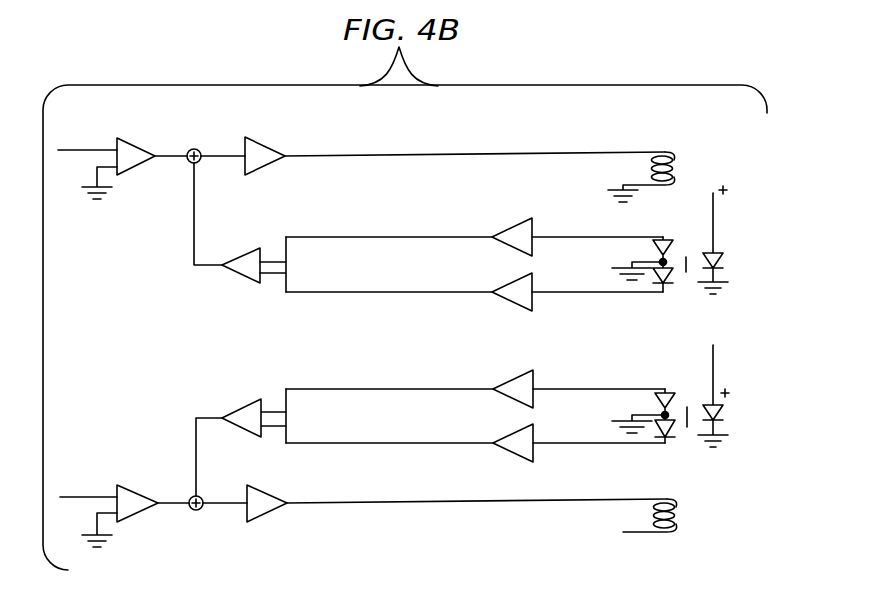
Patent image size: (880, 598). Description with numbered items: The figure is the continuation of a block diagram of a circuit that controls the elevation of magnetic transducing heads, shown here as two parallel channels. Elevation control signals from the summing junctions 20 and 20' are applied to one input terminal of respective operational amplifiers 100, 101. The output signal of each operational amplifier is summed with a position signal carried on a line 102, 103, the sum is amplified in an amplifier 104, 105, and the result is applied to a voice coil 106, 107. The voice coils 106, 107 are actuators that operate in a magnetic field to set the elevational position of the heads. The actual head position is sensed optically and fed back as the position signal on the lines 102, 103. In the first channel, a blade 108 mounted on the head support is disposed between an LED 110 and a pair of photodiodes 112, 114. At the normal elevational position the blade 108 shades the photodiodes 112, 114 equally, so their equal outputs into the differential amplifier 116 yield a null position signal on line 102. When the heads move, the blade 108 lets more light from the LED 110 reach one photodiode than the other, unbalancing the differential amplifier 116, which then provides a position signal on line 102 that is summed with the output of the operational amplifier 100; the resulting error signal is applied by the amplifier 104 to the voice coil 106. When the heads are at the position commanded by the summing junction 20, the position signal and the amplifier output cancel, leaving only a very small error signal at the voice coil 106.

The summing junction 20 is at (87, 149).
The summing junction 20' is at (88, 496).
The operational amplifier 100 is at (148, 140).
The operational amplifier 101 is at (150, 485).
The line 102 is at (195, 207).
The line 103 is at (196, 455).
The amplifier 104 is at (270, 138).
The amplifier 105 is at (280, 487).
The voice coil 106 is at (683, 156).
The voice coil 107 is at (683, 517).
The blade 108 is at (688, 273).
The LED 110 is at (733, 258).
The photodiode 112 is at (670, 239).
The photodiode 114 is at (667, 284).
The differential amplifier 116 is at (245, 283).